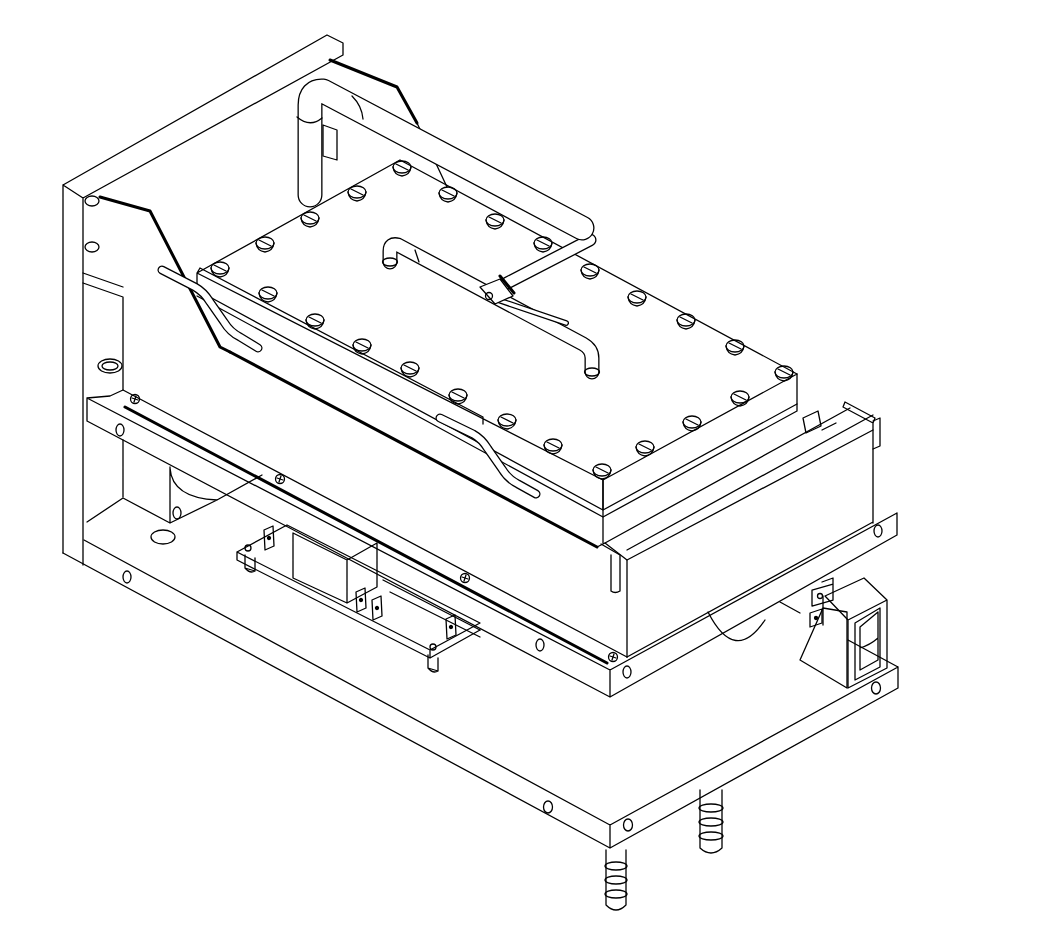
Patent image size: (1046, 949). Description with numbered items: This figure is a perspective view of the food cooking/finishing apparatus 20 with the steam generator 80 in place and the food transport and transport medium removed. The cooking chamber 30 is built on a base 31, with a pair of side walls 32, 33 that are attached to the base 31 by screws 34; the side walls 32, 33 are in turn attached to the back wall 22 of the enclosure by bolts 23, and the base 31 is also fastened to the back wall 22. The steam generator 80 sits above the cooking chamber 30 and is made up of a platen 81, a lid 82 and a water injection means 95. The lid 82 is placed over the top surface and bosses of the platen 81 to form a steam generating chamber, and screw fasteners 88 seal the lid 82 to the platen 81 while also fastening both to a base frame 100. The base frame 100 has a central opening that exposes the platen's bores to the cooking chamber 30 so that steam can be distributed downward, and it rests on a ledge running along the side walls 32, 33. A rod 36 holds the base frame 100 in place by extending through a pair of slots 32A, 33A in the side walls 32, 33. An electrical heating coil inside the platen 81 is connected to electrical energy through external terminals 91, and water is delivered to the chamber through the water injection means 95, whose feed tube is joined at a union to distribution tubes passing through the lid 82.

The food cooking/finishing apparatus 20 is at (624, 161).
The back wall 22 is at (236, 193).
The bolts 23 is at (115, 209).
The cooking chamber 30 is at (654, 610).
The base 31 is at (726, 573).
The side wall 32 is at (378, 493).
The slot 32A is at (604, 560).
The side wall 33 is at (864, 489).
The slot 33A is at (857, 414).
The screws 34 is at (137, 397).
The rod 36 is at (752, 492).
The steam generator 80 is at (663, 278).
The platen 81 is at (829, 432).
The lid 82 is at (678, 377).
The screw fasteners 88 is at (741, 339).
The external terminals 91 is at (172, 285).
The water injection means 95 is at (599, 221).
The base frame 100 is at (814, 420).